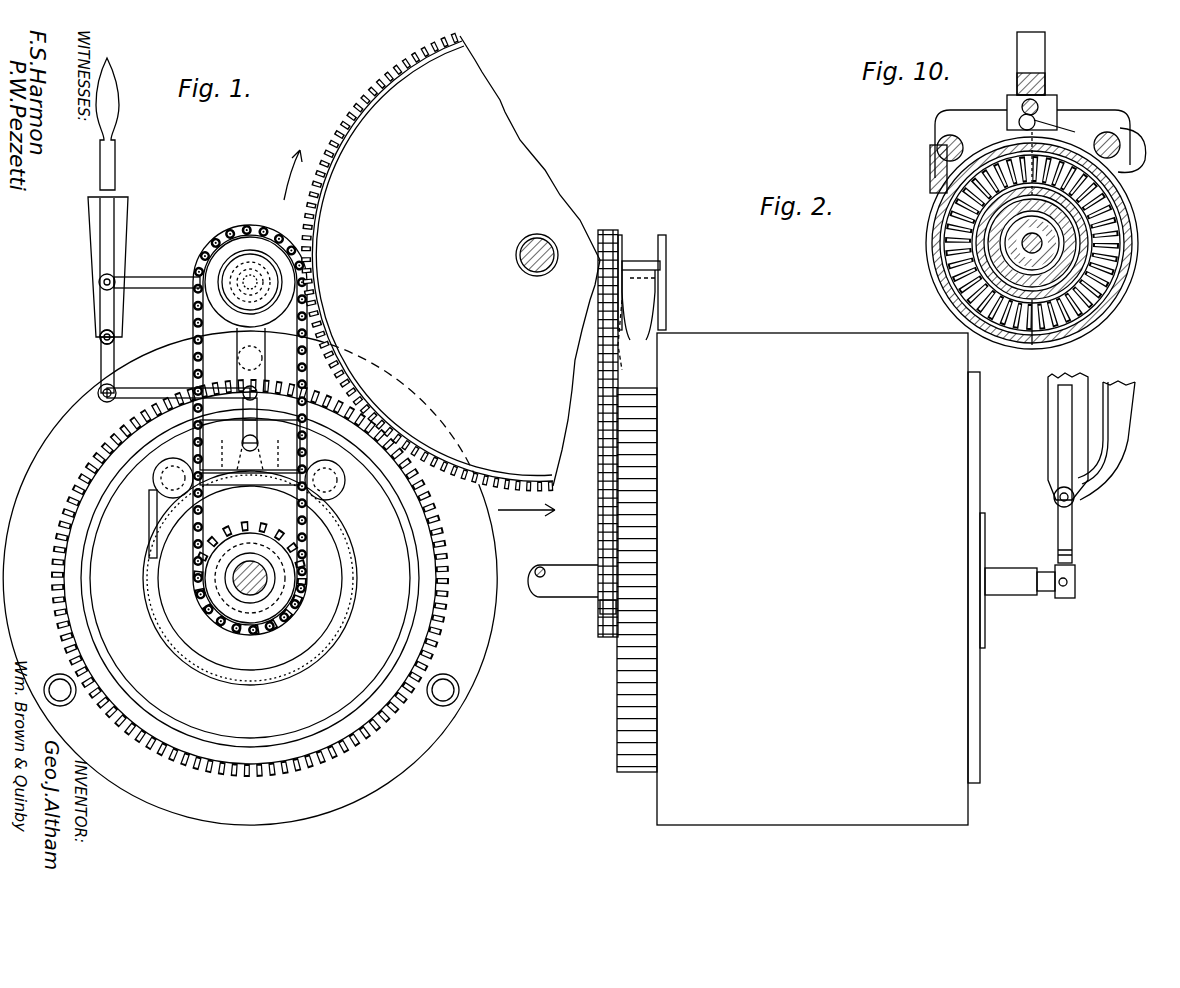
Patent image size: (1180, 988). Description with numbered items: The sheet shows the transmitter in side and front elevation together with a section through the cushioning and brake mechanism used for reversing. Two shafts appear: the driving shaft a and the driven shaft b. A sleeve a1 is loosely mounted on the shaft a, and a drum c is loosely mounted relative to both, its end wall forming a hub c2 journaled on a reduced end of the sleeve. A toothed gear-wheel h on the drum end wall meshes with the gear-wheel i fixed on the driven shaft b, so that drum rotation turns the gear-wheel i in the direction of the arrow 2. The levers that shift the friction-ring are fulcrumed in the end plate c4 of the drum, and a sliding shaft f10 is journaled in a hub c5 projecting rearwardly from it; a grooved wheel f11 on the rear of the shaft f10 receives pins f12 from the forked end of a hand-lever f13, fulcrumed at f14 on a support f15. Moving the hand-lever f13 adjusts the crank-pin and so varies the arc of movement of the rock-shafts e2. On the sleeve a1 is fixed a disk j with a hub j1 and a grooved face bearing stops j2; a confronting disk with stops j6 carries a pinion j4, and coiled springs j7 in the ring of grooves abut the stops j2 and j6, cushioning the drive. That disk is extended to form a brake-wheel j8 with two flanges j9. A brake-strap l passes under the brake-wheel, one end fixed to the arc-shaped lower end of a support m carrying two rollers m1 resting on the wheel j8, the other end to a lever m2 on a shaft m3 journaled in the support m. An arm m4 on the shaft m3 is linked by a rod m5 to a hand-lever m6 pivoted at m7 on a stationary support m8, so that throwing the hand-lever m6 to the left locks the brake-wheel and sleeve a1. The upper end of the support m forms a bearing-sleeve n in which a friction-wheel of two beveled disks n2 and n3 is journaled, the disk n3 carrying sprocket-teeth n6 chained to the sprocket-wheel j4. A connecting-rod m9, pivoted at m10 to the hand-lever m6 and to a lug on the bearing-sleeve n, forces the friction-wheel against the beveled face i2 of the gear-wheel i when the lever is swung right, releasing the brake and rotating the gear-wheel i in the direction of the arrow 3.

In FIG. 1, the driving shaft a is at (246, 584).
In FIG. 2, the driving shaft a is at (563, 581).
In FIG. 1, the sleeve a1 is at (262, 580).
In FIG. 10, the sleeve a1 is at (1060, 232).
In FIG. 1, the driven shaft b is at (522, 242).
In FIG. 1, the drum c is at (478, 652).
In FIG. 2, the drum c is at (800, 345).
In FIG. 10, the hub c2 is at (1070, 250).
In FIG. 2, the end plate c4 is at (986, 577).
In FIG. 2, the hub c5 is at (1000, 570).
In FIG. 1, the rock-shafts e2 is at (446, 690).
In FIG. 2, the sliding shaft f10 is at (1047, 592).
In FIG. 2, the grooved wheel f11 is at (1072, 592).
In FIG. 2, the pins f12 is at (1067, 580).
In FIG. 2, the hand-lever f13 is at (1048, 450).
In FIG. 2, the fulcrum f14 is at (1054, 497).
In FIG. 2, the support f15 is at (1122, 445).
In FIG. 1, the gear-wheel h is at (430, 628).
In FIG. 2, the gear-wheel h is at (648, 520).
In FIG. 1, the gear-wheel i is at (530, 162).
In FIG. 10, the gear-wheel i is at (940, 197).
In FIG. 1, the beveled face i2 is at (308, 215).
In FIG. 10, the disk j is at (1115, 190).
In FIG. 1, the hub j1 is at (268, 612).
In FIG. 10, the hub j1 is at (1060, 265).
In FIG. 10, the stops j2 is at (955, 240).
In FIG. 1, the pinion j4 is at (255, 545).
In FIG. 2, the pinion j4 is at (598, 600).
In FIG. 10, the stops j6 is at (947, 252).
In FIG. 10, the coiled springs j7 is at (950, 268).
In FIG. 10, the brake-wheel j8 is at (1080, 320).
In FIG. 10, the flanges j9 is at (1115, 305).
In FIG. 1, the brake-strap l is at (158, 508).
In FIG. 1, the support m is at (257, 392).
In FIG. 2, the support m is at (630, 342).
In FIG. 10, the support m is at (1045, 55).
In FIG. 1, the rollers m1 is at (175, 480).
In FIG. 10, the rollers m1 is at (940, 130).
In FIG. 1, the lever m2 is at (228, 420).
In FIG. 10, the lever m2 is at (1040, 120).
In FIG. 1, the shaft m3 is at (258, 443).
In FIG. 10, the shaft m3 is at (1038, 107).
In FIG. 1, the arm m4 is at (257, 414).
In FIG. 1, the rod m5 is at (135, 400).
In FIG. 1, the hand-lever m6 is at (112, 140).
In FIG. 1, the pivot m7 is at (100, 337).
In FIG. 1, the stationary support m8 is at (92, 255).
In FIG. 1, the connecting-rod m9 is at (158, 290).
In FIG. 1, the pivot m10 is at (112, 278).
In FIG. 2, the bearing-sleeve n is at (640, 290).
In FIG. 2, the beveled disk n2 is at (666, 250).
In FIG. 1, the beveled disk n3 is at (240, 236).
In FIG. 2, the beveled disk n3 is at (623, 262).
In FIG. 1, the sprocket-teeth n6 is at (205, 322).
In FIG. 2, the sprocket-teeth n6 is at (607, 238).
In FIG. 1, the arrow 2 is at (526, 519).
In FIG. 1, the arrow 3 is at (285, 174).